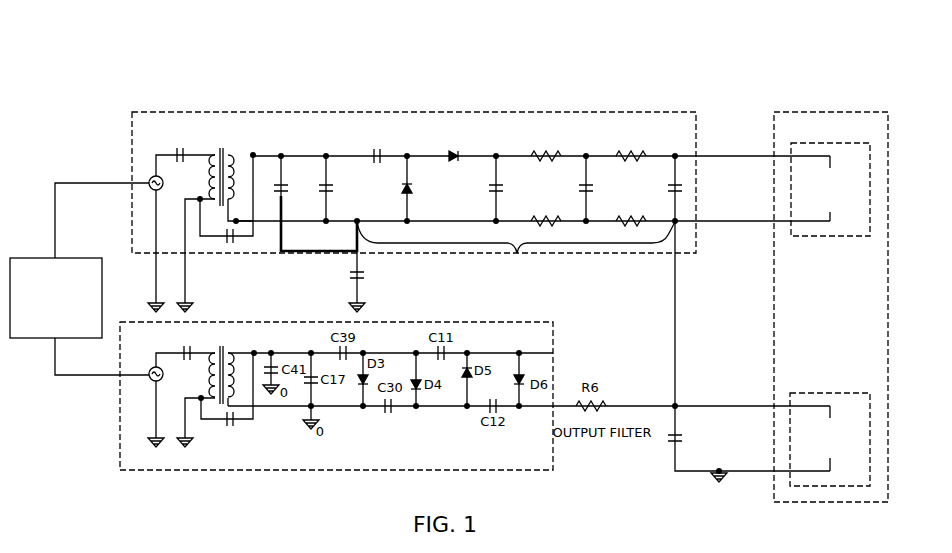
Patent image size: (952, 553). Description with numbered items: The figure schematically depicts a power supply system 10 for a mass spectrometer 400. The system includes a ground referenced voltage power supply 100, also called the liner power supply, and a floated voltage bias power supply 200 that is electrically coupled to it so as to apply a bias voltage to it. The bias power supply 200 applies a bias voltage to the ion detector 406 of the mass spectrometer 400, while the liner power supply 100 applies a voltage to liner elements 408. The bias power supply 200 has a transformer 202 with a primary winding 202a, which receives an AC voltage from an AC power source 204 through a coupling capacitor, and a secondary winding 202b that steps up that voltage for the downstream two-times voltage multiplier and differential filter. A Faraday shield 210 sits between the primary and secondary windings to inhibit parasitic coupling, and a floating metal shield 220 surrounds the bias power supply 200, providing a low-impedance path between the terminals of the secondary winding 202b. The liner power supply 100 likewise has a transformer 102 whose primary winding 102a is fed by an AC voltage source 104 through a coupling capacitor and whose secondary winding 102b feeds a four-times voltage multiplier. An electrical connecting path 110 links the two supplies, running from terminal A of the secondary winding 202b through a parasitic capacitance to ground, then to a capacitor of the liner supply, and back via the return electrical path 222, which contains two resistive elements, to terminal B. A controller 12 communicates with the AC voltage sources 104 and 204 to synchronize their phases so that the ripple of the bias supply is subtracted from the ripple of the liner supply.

The power supply system 10 is at (157, 49).
The controller 12 is at (33, 257).
The ground referenced voltage power supply 100 is at (232, 471).
The transformer 102 is at (212, 371).
The primary winding 102a is at (210, 373).
The secondary winding 102b is at (238, 364).
The AC voltage source 104 is at (150, 368).
The electrical connecting path 110 is at (668, 318).
The floated voltage bias power supply 200 is at (366, 102).
The transformer 202 is at (210, 142).
The primary winding 202a is at (212, 183).
The secondary winding 202b is at (237, 164).
The AC power source 204 is at (149, 180).
The Faraday shield 210 is at (223, 228).
The floating metal shield 220 is at (439, 255).
The return electrical path 222 is at (516, 252).
The mass spectrometer 400 is at (869, 273).
The ion detector 406 is at (880, 191).
The liner elements 408 is at (872, 431).